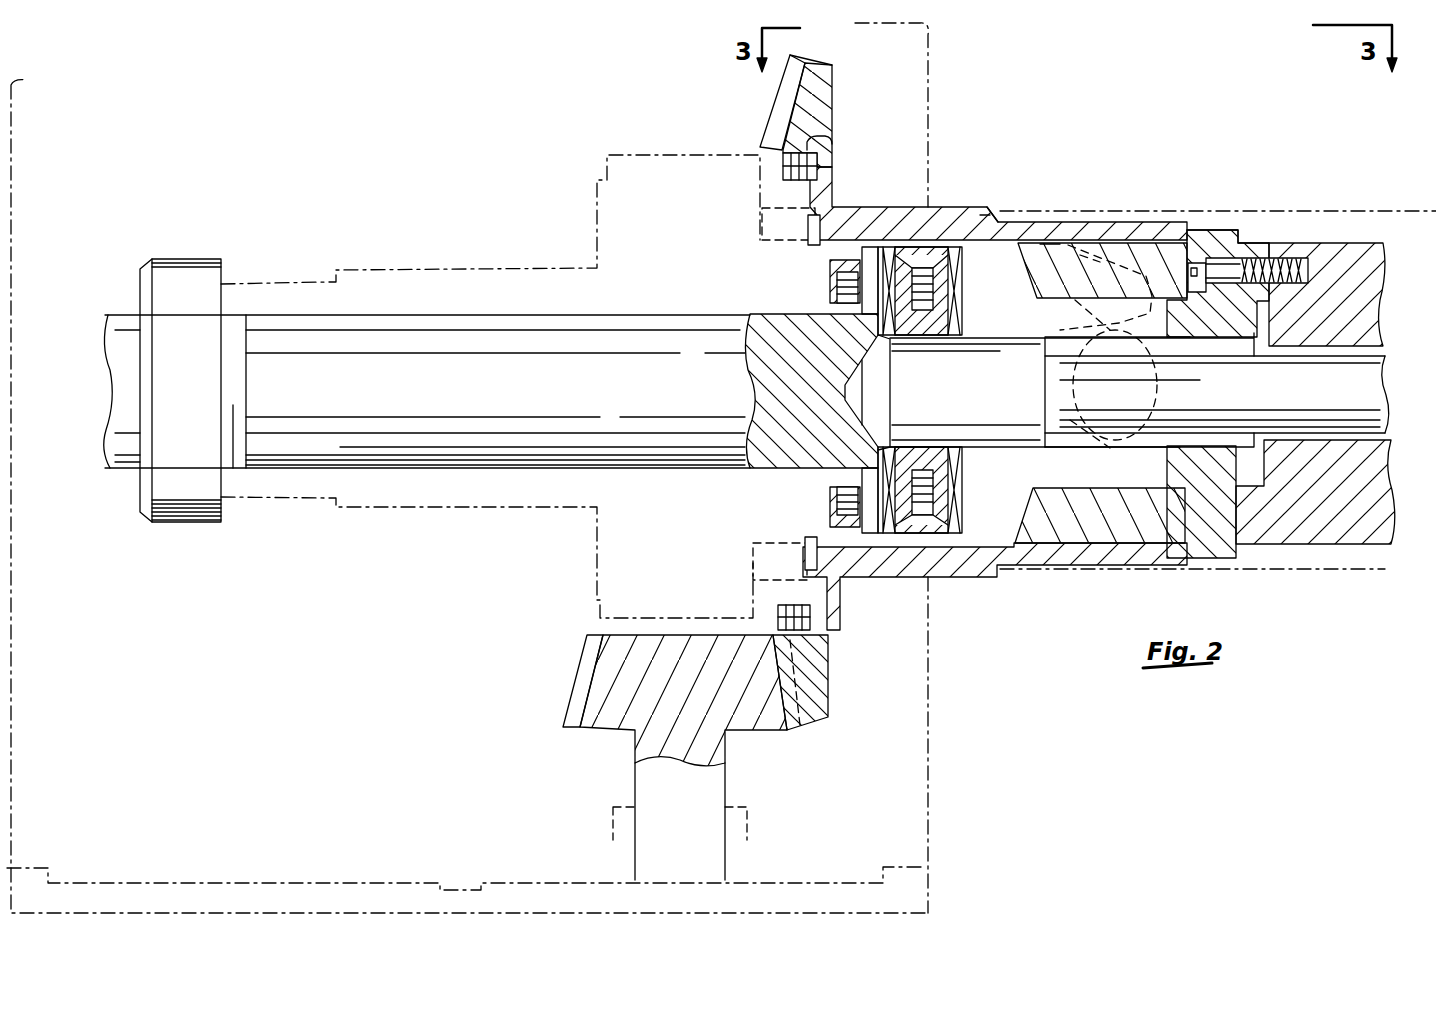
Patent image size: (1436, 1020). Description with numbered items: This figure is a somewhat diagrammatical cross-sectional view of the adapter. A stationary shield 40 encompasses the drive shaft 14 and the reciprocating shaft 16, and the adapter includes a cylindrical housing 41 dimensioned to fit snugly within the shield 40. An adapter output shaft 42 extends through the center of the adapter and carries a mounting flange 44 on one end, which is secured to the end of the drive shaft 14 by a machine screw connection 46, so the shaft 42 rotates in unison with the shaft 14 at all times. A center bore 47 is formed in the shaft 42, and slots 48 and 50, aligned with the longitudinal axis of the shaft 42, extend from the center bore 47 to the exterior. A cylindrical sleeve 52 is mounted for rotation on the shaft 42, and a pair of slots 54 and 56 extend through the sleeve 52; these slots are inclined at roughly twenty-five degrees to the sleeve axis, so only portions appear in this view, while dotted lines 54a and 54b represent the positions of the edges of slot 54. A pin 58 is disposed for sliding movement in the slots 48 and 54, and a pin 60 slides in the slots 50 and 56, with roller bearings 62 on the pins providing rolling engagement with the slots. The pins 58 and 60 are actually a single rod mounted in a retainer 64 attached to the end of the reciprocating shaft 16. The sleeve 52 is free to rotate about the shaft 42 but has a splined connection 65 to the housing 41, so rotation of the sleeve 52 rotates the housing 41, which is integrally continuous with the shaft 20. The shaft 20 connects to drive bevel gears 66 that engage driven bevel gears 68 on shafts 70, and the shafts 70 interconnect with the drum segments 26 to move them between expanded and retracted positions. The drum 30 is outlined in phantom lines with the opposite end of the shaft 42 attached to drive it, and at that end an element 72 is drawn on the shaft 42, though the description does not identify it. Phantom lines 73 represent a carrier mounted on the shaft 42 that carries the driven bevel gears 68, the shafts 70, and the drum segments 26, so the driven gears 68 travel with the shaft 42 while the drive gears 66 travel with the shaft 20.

The drive shaft 14 is at (1345, 255).
The reciprocating shaft 16 is at (1267, 398).
The shaft 20 is at (875, 205).
The drum segments 26 is at (905, 892).
The drum 30 is at (933, 85).
The stationary shield 40 is at (1265, 211).
The cylindrical housing 41 is at (980, 215).
The adapter output shaft 42 is at (662, 337).
The mounting flange 44 is at (1238, 232).
The machine screw connection 46 is at (1212, 262).
The center bore 47 is at (1177, 437).
The slot 48 is at (1160, 320).
The slot 50 is at (1060, 468).
The cylindrical sleeve 52 is at (1130, 245).
The slot 54 is at (1045, 287).
The dotted line 54a is at (1010, 328).
The dotted line 54b is at (1090, 250).
The slot 56 is at (987, 530).
The pin 58 is at (938, 300).
The pin 60 is at (933, 507).
The roller bearings 62 is at (960, 260).
The retainer 64 is at (993, 408).
The splined connection 65 is at (1048, 243).
The drive bevel gears 66 is at (828, 77).
The driven bevel gears 68 is at (753, 712).
The shafts 70 is at (695, 782).
The nut 72 is at (199, 281).
The phantom lines 73 is at (412, 268).